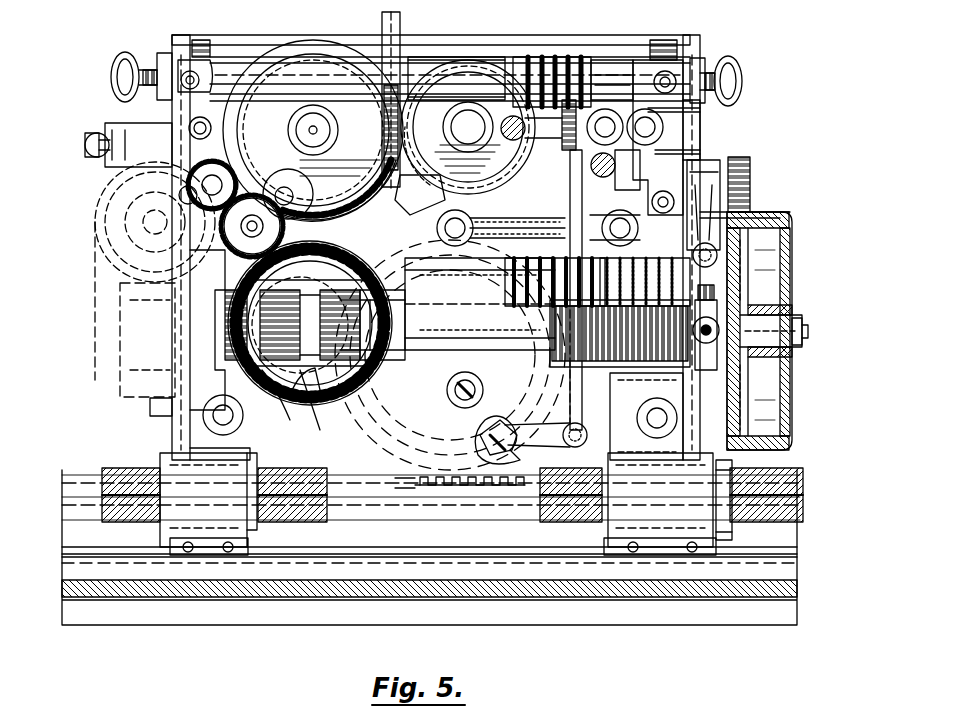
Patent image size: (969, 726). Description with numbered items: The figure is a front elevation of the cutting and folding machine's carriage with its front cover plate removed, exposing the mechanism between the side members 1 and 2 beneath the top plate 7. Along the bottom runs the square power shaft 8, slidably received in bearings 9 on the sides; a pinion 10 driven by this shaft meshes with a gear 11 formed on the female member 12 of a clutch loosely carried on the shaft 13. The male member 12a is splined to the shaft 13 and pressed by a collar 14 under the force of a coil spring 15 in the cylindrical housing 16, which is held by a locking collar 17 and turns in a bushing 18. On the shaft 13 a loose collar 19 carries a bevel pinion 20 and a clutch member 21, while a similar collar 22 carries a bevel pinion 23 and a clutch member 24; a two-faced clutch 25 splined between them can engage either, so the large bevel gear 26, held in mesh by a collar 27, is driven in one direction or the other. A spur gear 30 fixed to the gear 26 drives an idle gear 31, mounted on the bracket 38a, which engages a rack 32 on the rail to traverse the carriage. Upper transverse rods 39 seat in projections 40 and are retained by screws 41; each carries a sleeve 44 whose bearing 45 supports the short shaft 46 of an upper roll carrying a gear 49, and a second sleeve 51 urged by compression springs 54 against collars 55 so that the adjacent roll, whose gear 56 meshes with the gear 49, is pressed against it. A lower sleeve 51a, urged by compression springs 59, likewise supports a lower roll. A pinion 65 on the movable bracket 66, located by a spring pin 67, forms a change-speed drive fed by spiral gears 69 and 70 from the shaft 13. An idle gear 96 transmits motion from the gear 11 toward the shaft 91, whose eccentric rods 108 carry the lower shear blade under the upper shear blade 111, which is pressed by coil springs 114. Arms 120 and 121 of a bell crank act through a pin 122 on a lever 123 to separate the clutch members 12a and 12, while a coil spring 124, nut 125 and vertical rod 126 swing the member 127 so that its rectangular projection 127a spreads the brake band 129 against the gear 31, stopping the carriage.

The side member 1 is at (182, 418).
The side member 2 is at (690, 138).
The plate 7 is at (520, 50).
The power shaft 8 is at (762, 505).
The bearings 9 is at (195, 500).
The pinion 10 is at (742, 530).
The gear 11 is at (803, 204).
The female member of clutch 12 is at (780, 440).
The male member of clutch 12a is at (748, 398).
The shaft 13 is at (775, 350).
The collar 14 is at (708, 370).
The coil spring 15 is at (652, 398).
The cylindrical housing 16 is at (605, 358).
The locking collar 17 is at (615, 378).
The bushing 18 is at (630, 428).
The collar 19 is at (448, 386).
The bevel pinion 20 is at (385, 363).
The clutch member 21 is at (325, 398).
The collar 22 is at (210, 370).
The bevel pinion 23 is at (240, 398).
The clutch member 24 is at (282, 413).
The two-faced clutch 25 is at (322, 436).
The bevel gear 26 is at (345, 263).
The collar 27 is at (445, 338).
The spur gear 30 is at (330, 393).
The idle gear 31 is at (420, 478).
The rack 32 is at (462, 488).
The bracket 38a is at (450, 356).
The rods 39 is at (398, 53).
The projection 40 is at (160, 60).
The screws 41 is at (118, 66).
The sleeve 44 is at (258, 68).
The bearing 45 is at (339, 126).
The short shaft 46 is at (240, 173).
The gear 49 is at (335, 183).
The second sleeve 51 is at (470, 68).
The sleeve 51a is at (490, 260).
The compression springs 54 is at (560, 55).
The collars 55 is at (597, 66).
The gear 56 is at (415, 188).
The compression springs 59 is at (535, 260).
The pinion 65 is at (313, 130).
The bracket 66 is at (160, 118).
The spring pin 67 is at (102, 158).
The spiral gear 69 is at (120, 268).
The spiral gear 70 is at (140, 388).
The shaft 91 is at (612, 208).
The idle gear 96 is at (750, 168).
The rods 108 is at (495, 223).
The shear blade 111 is at (428, 143).
The coil springs 114 is at (443, 127).
The arm 120 is at (700, 150).
The arm 121 is at (700, 110).
The pin 122 is at (655, 193).
The lever 123 is at (722, 198).
The coil spring 124 is at (490, 148).
The nut 125 is at (575, 150).
The vertical rod 126 is at (570, 188).
The member 127 is at (578, 448).
The rectangular projection 127a is at (525, 438).
The brake band 129 is at (512, 468).